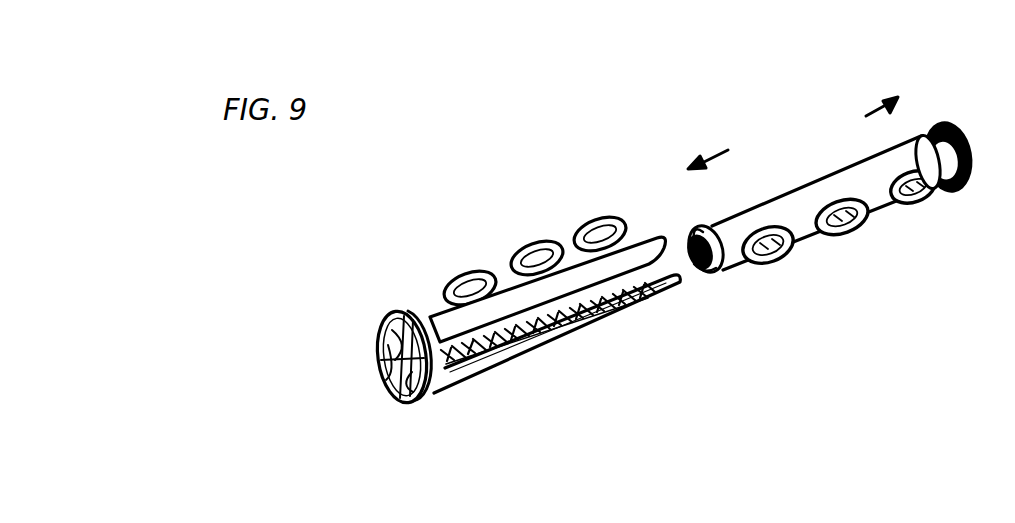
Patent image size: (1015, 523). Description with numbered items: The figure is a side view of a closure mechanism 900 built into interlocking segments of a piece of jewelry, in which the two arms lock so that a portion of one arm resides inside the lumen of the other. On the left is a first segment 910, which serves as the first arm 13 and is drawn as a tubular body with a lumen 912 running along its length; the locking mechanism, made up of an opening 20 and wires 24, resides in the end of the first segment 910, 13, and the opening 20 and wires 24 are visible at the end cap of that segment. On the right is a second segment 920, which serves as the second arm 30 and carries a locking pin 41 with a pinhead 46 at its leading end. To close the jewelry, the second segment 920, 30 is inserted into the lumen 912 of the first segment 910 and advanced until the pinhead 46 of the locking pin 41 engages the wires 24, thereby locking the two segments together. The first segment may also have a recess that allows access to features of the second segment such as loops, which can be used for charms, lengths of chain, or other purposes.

The closure mechanism 900 is at (245, 315).
The first segment 910 is at (486, 375).
The lumen 912 is at (530, 327).
The first arm 13 is at (573, 336).
The opening 20 is at (403, 311).
The wires 24 is at (381, 378).
The second segment 920 is at (812, 180).
The locking pin 41 is at (688, 241).
The pinhead 46 is at (700, 268).
The second arm 30 is at (859, 160).